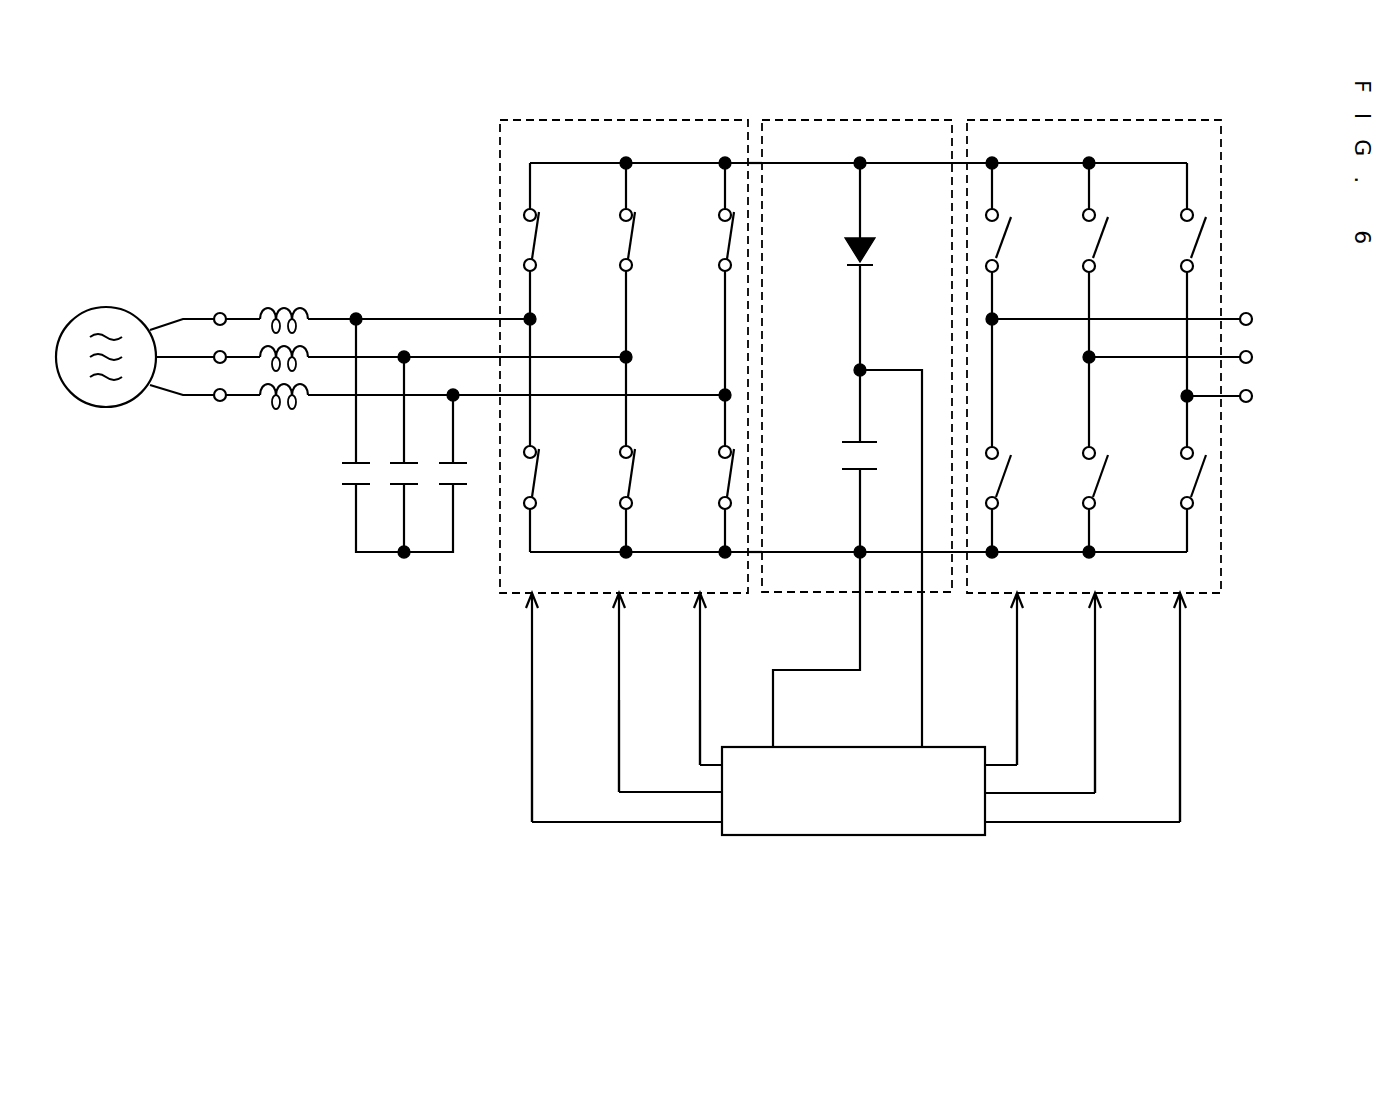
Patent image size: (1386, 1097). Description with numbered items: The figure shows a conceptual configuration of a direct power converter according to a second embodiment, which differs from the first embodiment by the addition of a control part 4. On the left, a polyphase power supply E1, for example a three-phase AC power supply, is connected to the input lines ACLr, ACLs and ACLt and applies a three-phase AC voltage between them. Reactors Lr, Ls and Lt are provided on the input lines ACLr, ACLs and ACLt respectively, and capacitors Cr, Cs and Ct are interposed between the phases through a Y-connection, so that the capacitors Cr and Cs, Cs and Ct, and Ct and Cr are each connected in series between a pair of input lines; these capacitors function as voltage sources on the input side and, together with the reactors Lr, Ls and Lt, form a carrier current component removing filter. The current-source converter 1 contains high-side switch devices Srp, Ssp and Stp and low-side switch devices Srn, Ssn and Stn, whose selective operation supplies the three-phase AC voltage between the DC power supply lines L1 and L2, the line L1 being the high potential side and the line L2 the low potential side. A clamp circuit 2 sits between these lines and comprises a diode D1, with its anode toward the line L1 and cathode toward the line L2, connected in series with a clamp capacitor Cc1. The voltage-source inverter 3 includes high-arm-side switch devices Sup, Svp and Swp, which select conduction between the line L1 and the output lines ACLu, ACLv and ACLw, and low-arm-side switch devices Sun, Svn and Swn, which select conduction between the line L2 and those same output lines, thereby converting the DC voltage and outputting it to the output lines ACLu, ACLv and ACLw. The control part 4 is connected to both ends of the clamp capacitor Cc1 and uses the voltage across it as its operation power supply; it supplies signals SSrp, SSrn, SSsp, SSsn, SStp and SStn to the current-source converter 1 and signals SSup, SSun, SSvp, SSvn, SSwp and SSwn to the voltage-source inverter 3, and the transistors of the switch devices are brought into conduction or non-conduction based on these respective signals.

The power supply E1 is at (100, 307).
The reactor Lr is at (272, 307).
The reactor Ls is at (316, 344).
The reactor Lt is at (273, 409).
The input line ACLr is at (373, 318).
The input line ACLs is at (428, 355).
The input line ACLt is at (478, 393).
The capacitor Cr is at (348, 487).
The capacitor Cs is at (400, 487).
The capacitor Ct is at (449, 487).
The current-source converter 1 is at (673, 118).
The clamp circuit 2 is at (932, 120).
The voltage-source inverter 3 is at (1197, 120).
The control part 4 is at (808, 838).
The DC power supply line L1 is at (752, 163).
The DC power supply line L2 is at (752, 553).
The diode D1 is at (873, 250).
The clamp capacitor Cc1 is at (852, 440).
The switch device Srp is at (538, 235).
The switch device Ssp is at (634, 235).
The switch device Stp is at (713, 237).
The switch device Srn is at (538, 472).
The switch device Ssn is at (634, 472).
The switch device Stn is at (713, 475).
The high-arm-side switch device Sup is at (1013, 237).
The high-arm-side switch device Svp is at (1110, 237).
The high-arm-side switch device Swp is at (1180, 242).
The low-arm-side switch device Sun is at (1008, 475).
The low-arm-side switch device Svn is at (1105, 475).
The low-arm-side switch device Swn is at (1180, 475).
The output line ACLu is at (1228, 319).
The output line ACLv is at (1230, 357).
The output line ACLw is at (1230, 402).
The signal SSrp is at (597, 707).
The signal SSrn is at (502, 761).
The signal SSsp is at (642, 692).
The signal SSsn is at (590, 746).
The signal SStp is at (682, 679).
The signal SStn is at (671, 732).
The signal SSup is at (1031, 679).
The signal SSun is at (1047, 732).
The signal SSvp is at (1071, 693).
The signal SSvn is at (1126, 746).
The signal SSwp is at (1116, 707).
The signal SSwn is at (1213, 761).